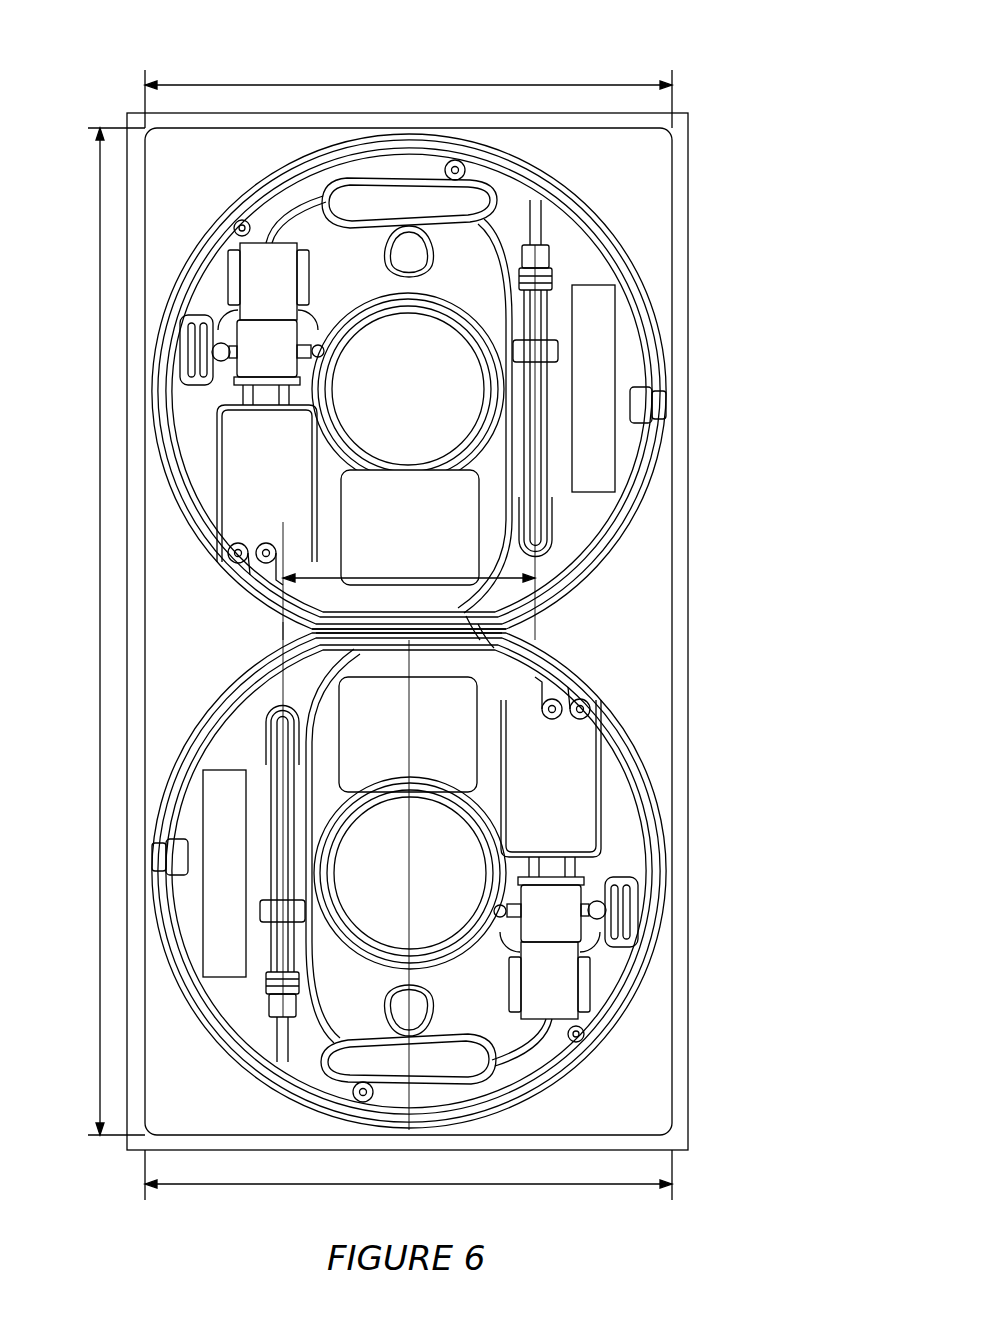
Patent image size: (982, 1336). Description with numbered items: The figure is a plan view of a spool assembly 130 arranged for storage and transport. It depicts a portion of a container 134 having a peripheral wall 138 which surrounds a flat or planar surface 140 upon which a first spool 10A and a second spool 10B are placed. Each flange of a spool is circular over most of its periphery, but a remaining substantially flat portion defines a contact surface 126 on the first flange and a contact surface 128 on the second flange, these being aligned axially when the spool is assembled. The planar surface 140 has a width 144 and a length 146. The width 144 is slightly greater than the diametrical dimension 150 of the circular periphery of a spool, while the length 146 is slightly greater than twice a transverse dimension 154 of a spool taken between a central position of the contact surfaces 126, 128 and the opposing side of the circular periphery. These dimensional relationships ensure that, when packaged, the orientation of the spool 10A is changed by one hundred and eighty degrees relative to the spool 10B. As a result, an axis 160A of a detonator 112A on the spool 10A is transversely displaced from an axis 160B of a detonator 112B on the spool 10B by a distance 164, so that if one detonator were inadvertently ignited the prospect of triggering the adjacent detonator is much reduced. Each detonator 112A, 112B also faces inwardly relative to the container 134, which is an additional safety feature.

The spool assembly 130 is at (734, 79).
The container 134 is at (700, 624).
The peripheral wall 138 is at (681, 518).
The width 144 is at (470, 85).
The length 146 is at (92, 631).
The diametrical dimension 150 is at (470, 1185).
The first spool 10A is at (656, 227).
The second spool 10B is at (656, 740).
The detonator 112A is at (543, 302).
The detonator 112B is at (272, 962).
The distance 164 is at (442, 576).
The transverse dimension 154 is at (403, 674).
The axis 160A is at (537, 497).
The axis 160B is at (277, 627).
The planar surface 140 is at (226, 640).
The contact surface 126 is at (480, 650).
The contact surface 128 is at (521, 711).